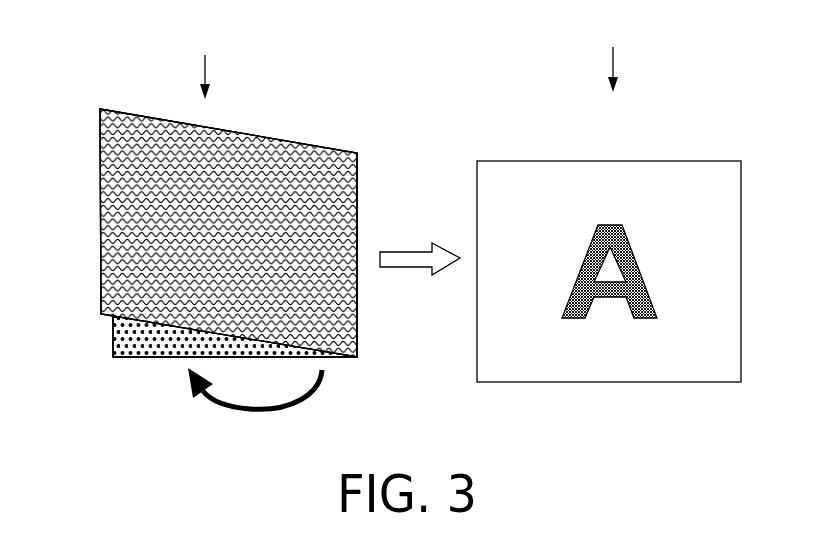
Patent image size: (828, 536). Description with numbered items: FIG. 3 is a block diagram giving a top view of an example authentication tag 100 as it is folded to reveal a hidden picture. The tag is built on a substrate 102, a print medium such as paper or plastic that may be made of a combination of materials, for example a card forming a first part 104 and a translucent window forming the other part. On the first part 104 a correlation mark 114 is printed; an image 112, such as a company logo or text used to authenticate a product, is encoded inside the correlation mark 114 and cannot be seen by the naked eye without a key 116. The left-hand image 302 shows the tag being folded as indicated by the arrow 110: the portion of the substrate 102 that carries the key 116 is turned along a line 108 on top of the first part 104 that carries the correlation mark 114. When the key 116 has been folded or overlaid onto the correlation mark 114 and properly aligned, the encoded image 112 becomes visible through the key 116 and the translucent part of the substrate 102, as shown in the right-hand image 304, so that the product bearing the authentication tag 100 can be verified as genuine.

The authentication tag 100 is at (643, 161).
The substrate 102 is at (118, 111).
The first part 104 is at (113, 332).
The line 108 is at (357, 189).
The arrow 110 is at (255, 412).
The image 112 is at (632, 249).
The correlation mark 114 is at (167, 340).
The key 116 is at (247, 160).
The image 302 is at (224, 46).
The image 304 is at (599, 39).